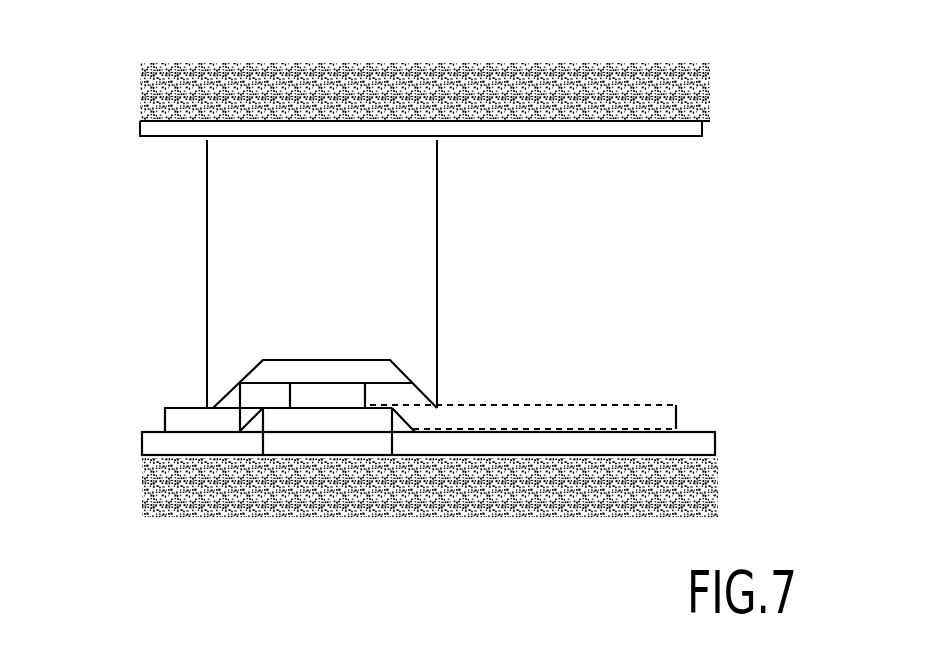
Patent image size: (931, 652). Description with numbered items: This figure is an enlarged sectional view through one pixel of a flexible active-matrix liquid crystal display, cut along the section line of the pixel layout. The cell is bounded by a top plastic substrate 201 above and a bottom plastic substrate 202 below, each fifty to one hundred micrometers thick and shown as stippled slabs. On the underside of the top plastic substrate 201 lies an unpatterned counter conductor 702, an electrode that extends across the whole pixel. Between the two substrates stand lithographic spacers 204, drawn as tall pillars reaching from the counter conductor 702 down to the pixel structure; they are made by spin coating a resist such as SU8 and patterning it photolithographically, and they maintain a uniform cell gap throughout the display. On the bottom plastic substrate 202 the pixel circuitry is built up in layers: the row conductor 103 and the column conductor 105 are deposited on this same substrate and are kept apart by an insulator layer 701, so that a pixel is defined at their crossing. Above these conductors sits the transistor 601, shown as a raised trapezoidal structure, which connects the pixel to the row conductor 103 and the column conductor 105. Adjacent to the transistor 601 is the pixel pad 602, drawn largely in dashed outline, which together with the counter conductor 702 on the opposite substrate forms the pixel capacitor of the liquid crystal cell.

The top plastic substrate 201 is at (560, 90).
The counter conductor 702 is at (165, 134).
The lithographic spacer 204 is at (255, 228).
The transistor 601 is at (278, 371).
The pixel pad 602 is at (503, 418).
The column conductor 105 is at (190, 416).
The insulator layer 701 is at (173, 445).
The row conductor 103 is at (278, 445).
The bottom plastic substrate 202 is at (597, 483).